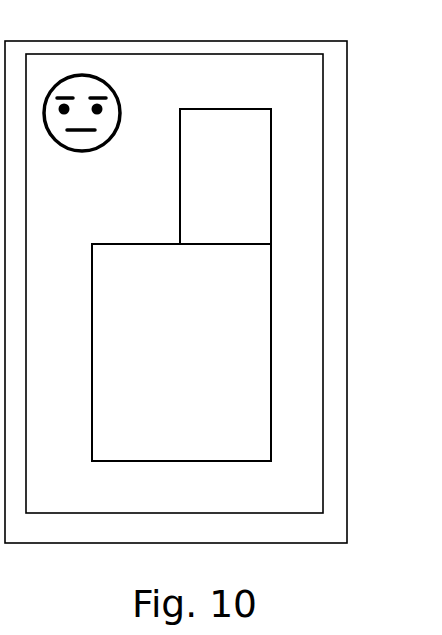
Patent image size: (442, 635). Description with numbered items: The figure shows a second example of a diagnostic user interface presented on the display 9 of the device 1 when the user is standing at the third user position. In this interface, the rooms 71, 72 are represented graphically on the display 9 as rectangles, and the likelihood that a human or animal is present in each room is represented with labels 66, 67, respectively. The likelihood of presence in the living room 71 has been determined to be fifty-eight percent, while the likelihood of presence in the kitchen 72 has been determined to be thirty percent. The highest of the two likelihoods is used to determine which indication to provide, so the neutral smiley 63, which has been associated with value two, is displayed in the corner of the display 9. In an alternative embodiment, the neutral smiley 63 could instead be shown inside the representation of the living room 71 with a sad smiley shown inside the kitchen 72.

The display device 1 is at (346, 472).
The display 9 is at (321, 513).
The neutral smiley 63 is at (107, 88).
The label 66 is at (252, 167).
The label 67 is at (187, 341).
The kitchen 72 is at (180, 206).
The living room 71 is at (92, 336).